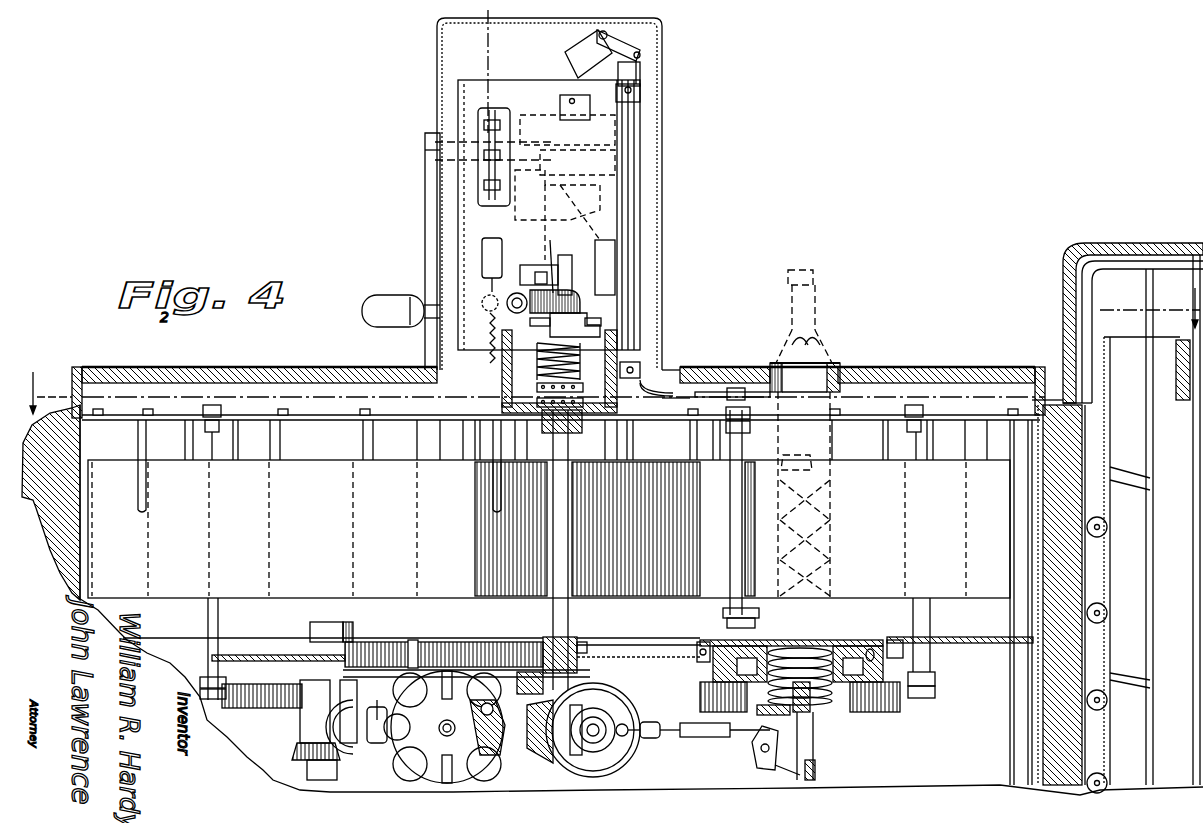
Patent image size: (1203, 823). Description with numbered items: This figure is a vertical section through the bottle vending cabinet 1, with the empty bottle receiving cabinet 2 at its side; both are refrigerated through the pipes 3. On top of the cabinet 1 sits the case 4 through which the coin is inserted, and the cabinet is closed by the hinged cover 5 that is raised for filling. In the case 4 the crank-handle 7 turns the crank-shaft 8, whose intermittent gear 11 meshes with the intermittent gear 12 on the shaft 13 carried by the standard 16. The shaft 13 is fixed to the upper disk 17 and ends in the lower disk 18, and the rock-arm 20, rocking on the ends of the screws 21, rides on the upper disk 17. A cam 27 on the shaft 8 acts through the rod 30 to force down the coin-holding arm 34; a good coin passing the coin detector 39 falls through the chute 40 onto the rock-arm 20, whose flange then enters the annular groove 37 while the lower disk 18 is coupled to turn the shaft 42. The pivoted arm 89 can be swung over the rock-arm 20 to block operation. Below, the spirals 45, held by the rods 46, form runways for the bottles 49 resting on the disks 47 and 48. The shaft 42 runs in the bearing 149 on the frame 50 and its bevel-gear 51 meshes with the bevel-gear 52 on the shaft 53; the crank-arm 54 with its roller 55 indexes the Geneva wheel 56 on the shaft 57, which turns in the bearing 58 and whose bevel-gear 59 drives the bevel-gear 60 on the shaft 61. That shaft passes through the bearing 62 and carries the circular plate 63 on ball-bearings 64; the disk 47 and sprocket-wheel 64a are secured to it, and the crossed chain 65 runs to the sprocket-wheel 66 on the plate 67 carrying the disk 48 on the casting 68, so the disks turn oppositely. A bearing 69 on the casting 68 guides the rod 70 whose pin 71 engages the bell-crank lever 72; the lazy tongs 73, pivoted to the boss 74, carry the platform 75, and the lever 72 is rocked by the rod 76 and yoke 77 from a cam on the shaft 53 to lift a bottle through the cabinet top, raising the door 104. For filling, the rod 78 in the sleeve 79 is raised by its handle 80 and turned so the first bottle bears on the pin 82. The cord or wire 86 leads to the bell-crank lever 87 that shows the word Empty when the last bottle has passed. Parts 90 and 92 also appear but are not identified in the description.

The bottle vending cabinet 1 is at (312, 400).
The empty bottle receiving cabinet 2 is at (1108, 243).
The pipes 3 is at (1115, 524).
The case 4 is at (662, 165).
The cover 5 is at (500, 12).
The crank-handle 7 is at (430, 230).
The crank-shaft 8 is at (483, 145).
The intermittent gear 11 is at (600, 127).
The intermittent gear 12 is at (587, 186).
The shaft 13 is at (567, 270).
The standard 16 is at (627, 290).
The upper disk 17 is at (587, 328).
The lower disk 18 is at (608, 330).
The rock-arm 20 is at (572, 350).
The screws 21 is at (500, 327).
The cam 27 is at (478, 172).
The rod 30 is at (488, 259).
The coin-holding arm 34 is at (550, 293).
The annular groove 37 is at (612, 325).
The coin detector 39 is at (608, 199).
The chute 40 is at (537, 278).
The shaft 42 is at (553, 612).
The spirals 45 is at (372, 436).
The rods 46 is at (277, 443).
The disk 47 is at (415, 641).
The disk 48 is at (970, 640).
The bottles 49 is at (812, 317).
The frame 50 is at (890, 700).
The bevel-gear 51 is at (594, 682).
The bevel-gear 52 is at (535, 750).
The shaft 53 is at (624, 736).
The crank-arm 54 is at (500, 688).
The roller 55 is at (470, 710).
The Geneva wheel 56 is at (400, 753).
The shaft 57 is at (378, 718).
The bearing 58 is at (345, 695).
The bevel-gear 59 is at (325, 727).
The bevel-gear 60 is at (297, 752).
The shaft 61 is at (312, 626).
The bearing 62 is at (305, 695).
The circular plate 63 is at (268, 640).
The ball-bearings 64 is at (358, 645).
The sprocket-wheel 64a is at (920, 625).
The chain 65 is at (255, 638).
The sprocket-wheel 66 is at (697, 660).
The plate 67 is at (869, 648).
The casting 68 is at (880, 670).
The bearing 69 is at (815, 755).
The rod 70 is at (815, 773).
The pin 71 is at (779, 766).
The bell-crank lever 72 is at (760, 762).
The lazy tongs 73 is at (835, 645).
The boss 74 is at (816, 716).
The platform 75 is at (800, 647).
The rod 76 is at (730, 738).
The yoke 77 is at (565, 760).
The rod 78 is at (752, 404).
The sleeve 79 is at (732, 522).
The handle 80 is at (746, 372).
The pin 82 is at (742, 620).
The cord, or wire 86 is at (662, 395).
The bell-crank lever 87 is at (573, 46).
The arm 89 is at (1108, 613).
The guide 90 is at (1113, 588).
The guide 92 is at (1160, 728).
The door 104 is at (830, 367).
The bearing 149 is at (580, 648).